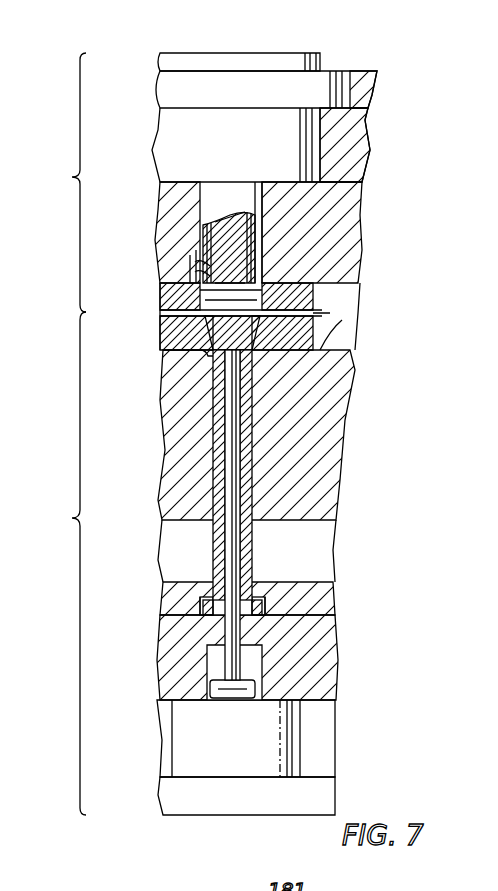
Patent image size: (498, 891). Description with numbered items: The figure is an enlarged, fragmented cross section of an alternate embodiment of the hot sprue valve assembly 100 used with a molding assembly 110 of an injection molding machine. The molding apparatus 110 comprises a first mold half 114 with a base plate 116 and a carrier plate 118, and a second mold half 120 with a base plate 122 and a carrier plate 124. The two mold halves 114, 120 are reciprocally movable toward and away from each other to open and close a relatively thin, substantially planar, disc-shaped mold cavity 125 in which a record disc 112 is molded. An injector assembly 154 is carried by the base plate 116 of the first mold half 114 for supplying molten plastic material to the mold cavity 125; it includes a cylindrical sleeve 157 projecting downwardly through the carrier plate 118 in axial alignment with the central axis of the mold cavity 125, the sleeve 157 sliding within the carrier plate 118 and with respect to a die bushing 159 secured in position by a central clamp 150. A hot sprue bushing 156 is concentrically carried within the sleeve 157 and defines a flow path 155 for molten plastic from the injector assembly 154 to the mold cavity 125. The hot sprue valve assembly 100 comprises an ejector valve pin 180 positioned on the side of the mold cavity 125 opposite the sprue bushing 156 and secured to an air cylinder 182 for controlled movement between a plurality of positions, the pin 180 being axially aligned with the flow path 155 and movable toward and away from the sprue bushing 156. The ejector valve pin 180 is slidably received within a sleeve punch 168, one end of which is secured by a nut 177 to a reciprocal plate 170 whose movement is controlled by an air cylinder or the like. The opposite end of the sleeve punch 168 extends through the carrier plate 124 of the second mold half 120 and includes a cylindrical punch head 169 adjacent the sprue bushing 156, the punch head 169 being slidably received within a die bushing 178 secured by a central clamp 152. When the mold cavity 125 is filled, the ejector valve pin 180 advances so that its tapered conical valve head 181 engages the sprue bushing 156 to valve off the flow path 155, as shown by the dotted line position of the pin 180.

The injector assembly 154 is at (282, 97).
The base plate 116 is at (357, 120).
The carrier plate 118 is at (362, 162).
The flow path 155 is at (262, 218).
The hot sprue bushing 156 is at (258, 232).
The cylindrical sleeve 157 is at (252, 248).
The tapered conical valve head 181 is at (300, 262).
The record disc 112 is at (330, 305).
The molding assembly 110 is at (405, 318).
The mold cavity 125 is at (320, 316).
The cylindrical punch head 169 is at (318, 360).
The ejector valve pin 180 is at (232, 437).
The sleeve punch 168 is at (247, 467).
The nut 177 is at (262, 598).
The reciprocal plate 170 is at (323, 590).
The die bushing 159 is at (205, 282).
The central clamp 150 is at (167, 293).
The central clamp 152 is at (165, 330).
The die bushing 178 is at (178, 358).
The hot sprue valve assembly 100 is at (198, 378).
The carrier plate 124 is at (174, 458).
The base plate 122 is at (172, 650).
The air cylinder 182 is at (190, 733).
The first mold half 114 is at (57, 182).
The second mold half 120 is at (57, 563).